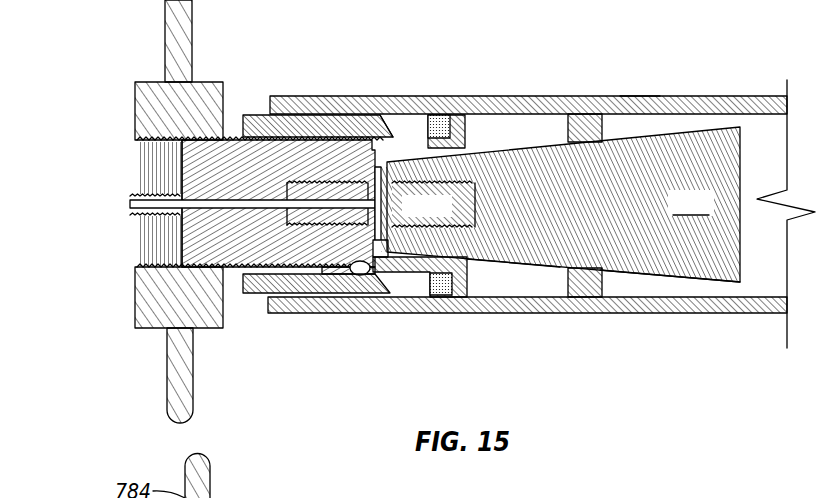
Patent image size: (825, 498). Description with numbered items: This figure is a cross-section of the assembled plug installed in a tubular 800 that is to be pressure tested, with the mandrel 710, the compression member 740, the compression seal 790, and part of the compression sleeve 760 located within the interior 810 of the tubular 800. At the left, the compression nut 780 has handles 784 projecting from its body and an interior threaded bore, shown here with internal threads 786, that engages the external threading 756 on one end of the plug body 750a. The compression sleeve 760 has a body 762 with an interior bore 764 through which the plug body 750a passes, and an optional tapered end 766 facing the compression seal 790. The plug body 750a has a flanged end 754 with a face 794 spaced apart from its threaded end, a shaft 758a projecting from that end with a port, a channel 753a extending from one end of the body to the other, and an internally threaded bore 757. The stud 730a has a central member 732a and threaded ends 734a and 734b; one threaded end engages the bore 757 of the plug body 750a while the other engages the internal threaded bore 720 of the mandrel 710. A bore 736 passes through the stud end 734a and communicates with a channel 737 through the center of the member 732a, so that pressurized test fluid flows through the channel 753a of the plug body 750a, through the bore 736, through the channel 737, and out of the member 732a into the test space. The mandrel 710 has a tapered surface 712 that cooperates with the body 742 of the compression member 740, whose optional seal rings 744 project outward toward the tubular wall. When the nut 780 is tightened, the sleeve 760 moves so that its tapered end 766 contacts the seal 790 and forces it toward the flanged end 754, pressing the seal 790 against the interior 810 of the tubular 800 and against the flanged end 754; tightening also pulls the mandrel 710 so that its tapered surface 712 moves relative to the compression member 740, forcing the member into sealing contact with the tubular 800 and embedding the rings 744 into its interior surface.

The mandrel 710 is at (560, 204).
The tapered surface 712 is at (686, 284).
The internal threaded bore 720 is at (470, 262).
The stud 730a is at (477, 206).
The central member 732a is at (380, 180).
The threaded end 734a is at (300, 232).
The threaded end 734b is at (433, 204).
The bore 736 is at (345, 210).
The channel 737 is at (380, 258).
The compression member 740 is at (586, 130).
The body 742 is at (442, 126).
The seal rings 744 is at (586, 286).
The plug body 750a is at (218, 170).
The channel 753a is at (135, 203).
The flanged end 754 is at (462, 292).
The external threading 756 is at (278, 130).
The internally threaded bore 757 is at (320, 228).
The shaft 758a is at (152, 214).
The compression sleeve 760 is at (332, 110).
The body 762 is at (247, 285).
The interior bore 764 is at (378, 302).
The tapered end 766 is at (386, 128).
The compression nut 780 is at (137, 127).
The handles 784 is at (172, 45).
The nut threads 786 is at (150, 250).
The compression seal 790 is at (450, 146).
The face 794 is at (441, 282).
The tubular 800 is at (786, 96).
The interior 810 is at (642, 98).